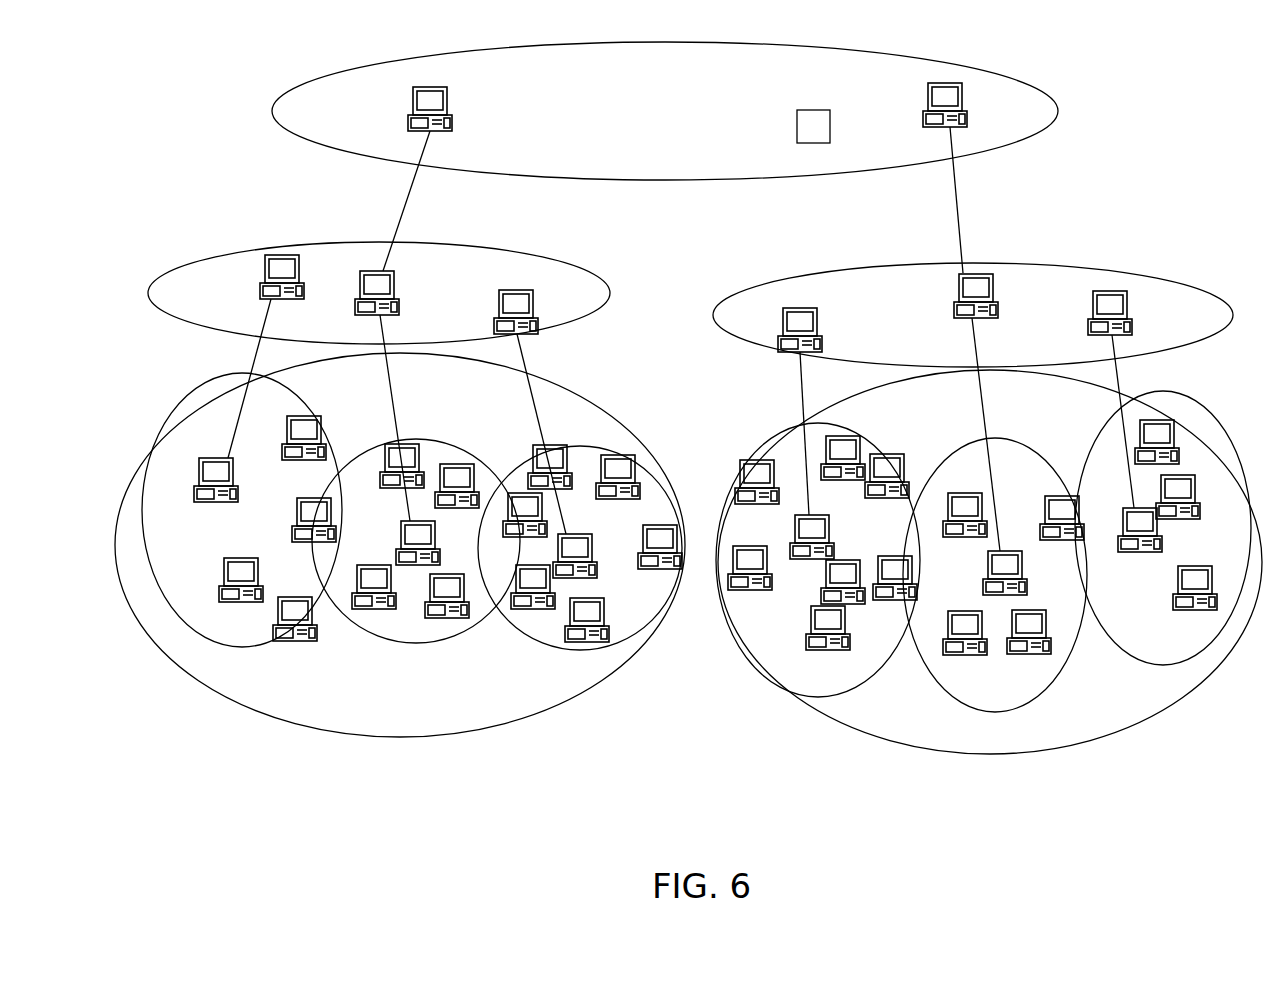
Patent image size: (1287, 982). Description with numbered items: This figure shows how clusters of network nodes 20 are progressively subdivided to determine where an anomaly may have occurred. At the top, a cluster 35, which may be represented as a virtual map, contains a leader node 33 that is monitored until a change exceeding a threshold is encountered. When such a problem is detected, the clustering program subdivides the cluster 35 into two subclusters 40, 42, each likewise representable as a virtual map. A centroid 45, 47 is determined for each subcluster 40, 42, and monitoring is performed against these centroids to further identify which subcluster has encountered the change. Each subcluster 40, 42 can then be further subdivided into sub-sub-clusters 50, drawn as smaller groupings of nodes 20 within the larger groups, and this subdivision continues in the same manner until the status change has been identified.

The node 20 is at (222, 572).
The leader node 33 is at (797, 113).
The cluster 35 is at (1057, 102).
The subcluster 40 is at (540, 255).
The subcluster 42 is at (1097, 265).
The centroid 45 is at (397, 276).
The centroid 47 is at (983, 275).
The sub-sub-cluster 50 is at (182, 402).